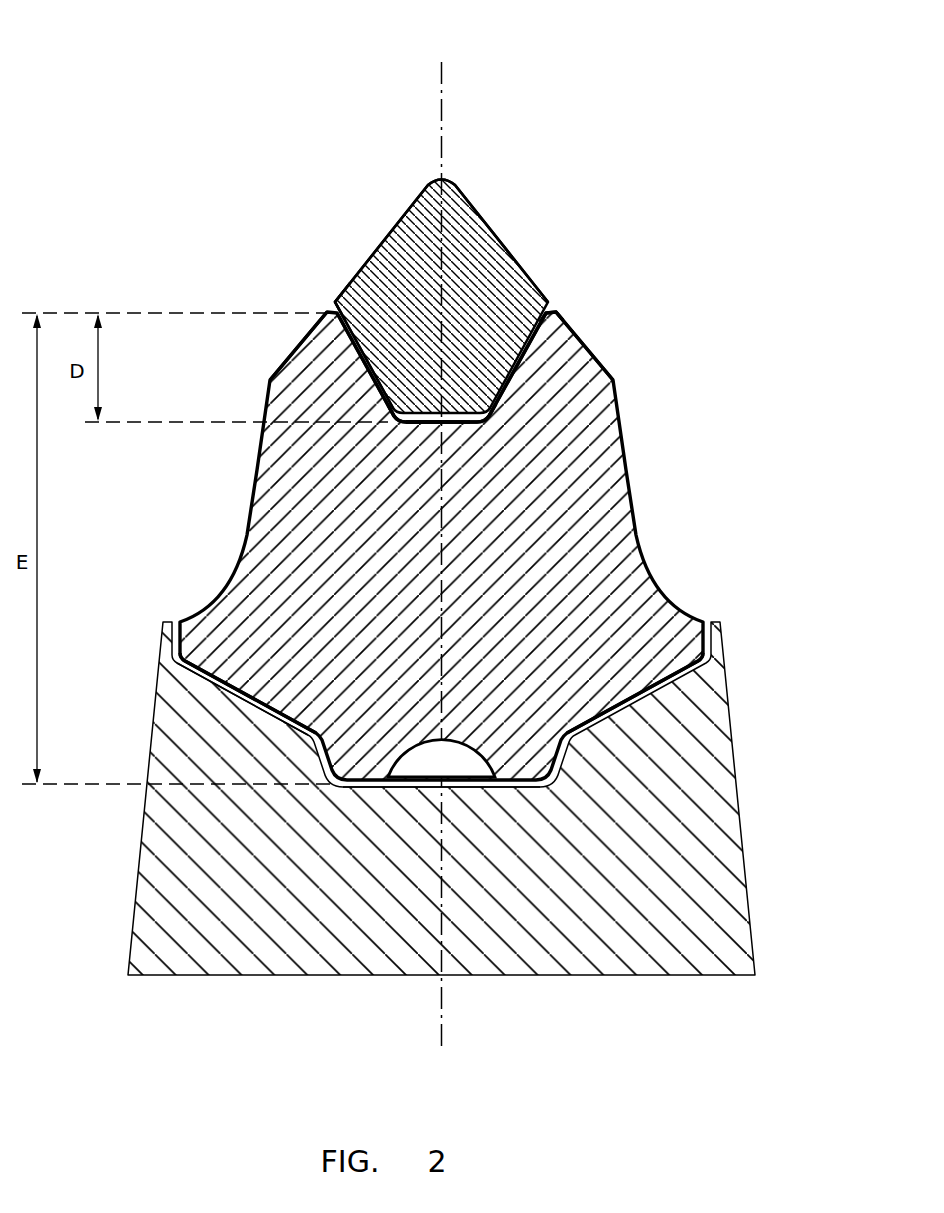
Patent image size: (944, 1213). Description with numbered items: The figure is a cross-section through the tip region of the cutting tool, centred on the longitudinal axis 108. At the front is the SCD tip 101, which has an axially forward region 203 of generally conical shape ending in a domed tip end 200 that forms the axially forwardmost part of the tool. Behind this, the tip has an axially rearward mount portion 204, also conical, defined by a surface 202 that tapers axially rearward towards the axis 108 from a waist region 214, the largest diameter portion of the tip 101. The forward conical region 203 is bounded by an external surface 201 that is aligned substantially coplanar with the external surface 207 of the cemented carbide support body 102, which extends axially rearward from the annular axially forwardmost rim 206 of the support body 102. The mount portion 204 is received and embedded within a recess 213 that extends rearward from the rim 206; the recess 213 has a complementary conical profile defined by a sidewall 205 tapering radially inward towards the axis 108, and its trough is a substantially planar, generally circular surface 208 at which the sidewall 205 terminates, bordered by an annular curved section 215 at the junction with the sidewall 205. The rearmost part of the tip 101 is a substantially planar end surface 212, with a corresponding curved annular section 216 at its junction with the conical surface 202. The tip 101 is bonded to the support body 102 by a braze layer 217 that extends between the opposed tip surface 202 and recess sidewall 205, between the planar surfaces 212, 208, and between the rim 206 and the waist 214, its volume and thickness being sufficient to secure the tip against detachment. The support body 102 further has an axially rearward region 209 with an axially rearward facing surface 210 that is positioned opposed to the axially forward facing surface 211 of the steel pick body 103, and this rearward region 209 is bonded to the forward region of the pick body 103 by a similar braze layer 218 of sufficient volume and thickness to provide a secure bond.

The SCD tip 101 is at (516, 202).
The support body 102 is at (655, 380).
The steel pick body 103 is at (766, 888).
The axis 108 is at (442, 86).
The domed tip end 200 is at (450, 182).
The external surface 201 is at (395, 222).
The surface 202 is at (538, 338).
The axially forward region 203 is at (497, 277).
The mount portion 204 is at (400, 353).
The sidewall 205 is at (515, 375).
The axially forwardmost rim 206 is at (557, 311).
The external surface 207 is at (288, 360).
The planar surface 208 is at (462, 425).
The axially rearward region 209 is at (540, 763).
The axially rearward facing surface 210 is at (250, 700).
The axially forward facing surface 211 is at (200, 713).
The planar end surface 212 is at (428, 423).
The recess 213 is at (361, 320).
The waist region 214 is at (333, 301).
The annular curved section 215 is at (490, 414).
The curved annular section 216 is at (421, 420).
The braze layer 217 is at (429, 428).
The braze layer 218 is at (634, 697).